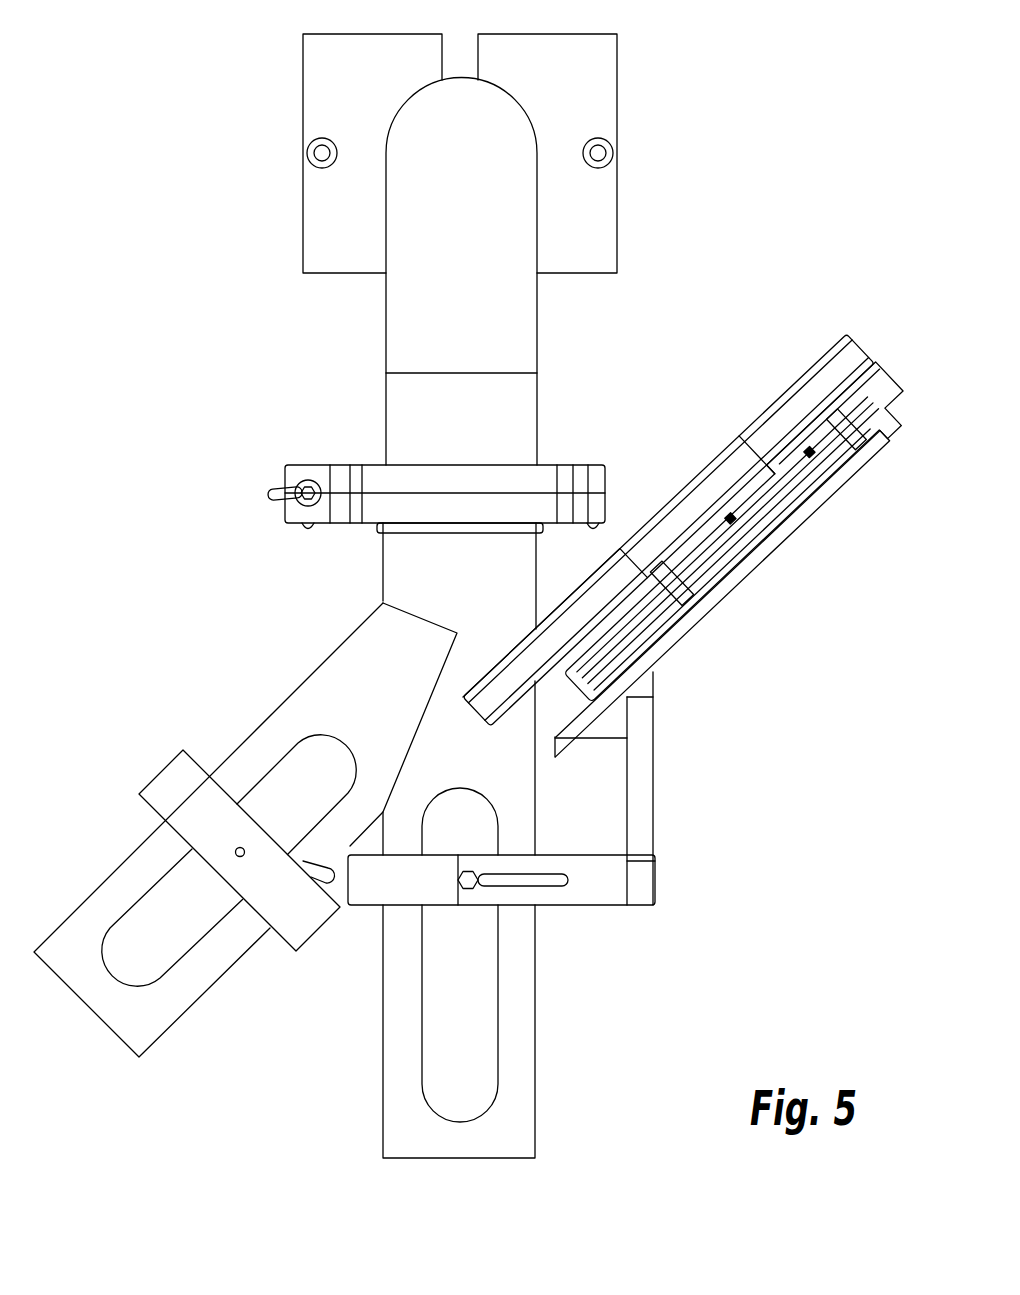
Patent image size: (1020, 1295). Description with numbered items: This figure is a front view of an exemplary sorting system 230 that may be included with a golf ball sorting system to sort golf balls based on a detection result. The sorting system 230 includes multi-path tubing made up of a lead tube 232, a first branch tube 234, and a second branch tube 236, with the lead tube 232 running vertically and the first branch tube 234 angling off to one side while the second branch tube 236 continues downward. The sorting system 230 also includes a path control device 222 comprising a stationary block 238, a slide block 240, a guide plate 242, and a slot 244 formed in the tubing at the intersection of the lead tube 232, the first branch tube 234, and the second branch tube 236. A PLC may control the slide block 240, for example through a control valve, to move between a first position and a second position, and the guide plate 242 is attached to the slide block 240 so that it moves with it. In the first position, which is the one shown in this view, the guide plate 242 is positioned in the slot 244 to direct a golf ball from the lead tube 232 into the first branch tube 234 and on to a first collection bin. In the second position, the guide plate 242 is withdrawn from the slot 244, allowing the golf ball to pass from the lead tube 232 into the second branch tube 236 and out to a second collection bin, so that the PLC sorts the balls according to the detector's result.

The path control device 222 is at (691, 592).
The sorting system 230 is at (688, 106).
The lead tube 232 is at (400, 346).
The first branch tube 234 is at (138, 850).
The second branch tube 236 is at (523, 1005).
The stationary block 238 is at (790, 530).
The slide block 240 is at (672, 534).
The guide plate 242 is at (737, 535).
The slot 244 is at (541, 623).